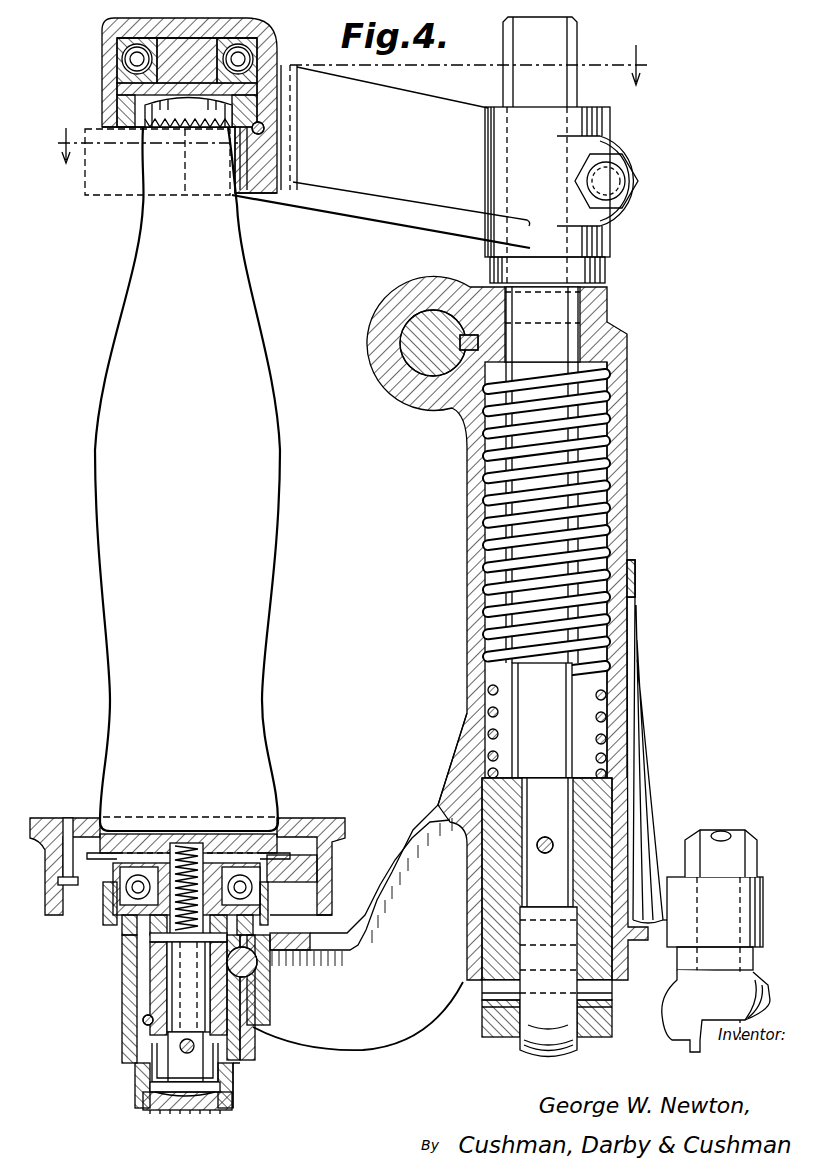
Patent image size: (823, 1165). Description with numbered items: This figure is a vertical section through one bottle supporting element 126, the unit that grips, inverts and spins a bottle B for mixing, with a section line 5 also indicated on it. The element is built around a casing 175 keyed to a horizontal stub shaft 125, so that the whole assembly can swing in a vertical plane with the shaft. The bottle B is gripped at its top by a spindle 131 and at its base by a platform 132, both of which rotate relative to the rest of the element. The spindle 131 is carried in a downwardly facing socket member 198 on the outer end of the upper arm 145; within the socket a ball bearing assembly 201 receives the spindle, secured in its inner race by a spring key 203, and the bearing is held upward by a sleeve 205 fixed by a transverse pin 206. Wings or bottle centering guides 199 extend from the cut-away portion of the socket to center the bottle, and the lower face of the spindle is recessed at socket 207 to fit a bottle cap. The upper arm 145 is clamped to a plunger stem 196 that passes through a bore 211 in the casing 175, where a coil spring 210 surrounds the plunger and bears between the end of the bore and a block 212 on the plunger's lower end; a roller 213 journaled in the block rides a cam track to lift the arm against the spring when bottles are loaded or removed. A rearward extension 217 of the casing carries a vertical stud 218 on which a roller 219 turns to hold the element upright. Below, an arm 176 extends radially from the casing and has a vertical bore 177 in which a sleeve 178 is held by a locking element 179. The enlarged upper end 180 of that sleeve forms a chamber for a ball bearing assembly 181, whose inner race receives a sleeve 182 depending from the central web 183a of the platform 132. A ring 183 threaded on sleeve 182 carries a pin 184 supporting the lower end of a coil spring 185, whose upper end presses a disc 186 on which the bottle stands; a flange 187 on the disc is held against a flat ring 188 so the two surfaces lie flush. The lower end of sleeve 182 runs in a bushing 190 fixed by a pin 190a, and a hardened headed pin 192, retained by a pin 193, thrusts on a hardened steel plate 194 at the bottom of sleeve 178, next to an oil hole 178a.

The bottle B is at (268, 590).
The section line 5- 5 is at (353, 104).
The spindle 131 is at (150, 27).
The ball bearing assembly 201 is at (122, 67).
The socket member 198 is at (112, 106).
The spring key 203 is at (248, 37).
The transverse pin 206 is at (280, 113).
The socket 207 is at (262, 160).
The sleeve 205 is at (252, 195).
The wings or bottle centering guides 199 is at (163, 184).
The upper arm 145 is at (333, 198).
The plunger stem 196 is at (613, 303).
The stub shaft 125 is at (422, 367).
The bottle supporting element 126 is at (454, 602).
The coil spring 210 is at (606, 512).
The bore 211 is at (630, 534).
The casing 175 is at (622, 627).
The block 212 is at (598, 807).
The roller 213 is at (537, 1022).
The rearward extension 217 is at (650, 870).
The stud 218 is at (722, 857).
The roller 219 is at (678, 1010).
The arm 176 is at (360, 1023).
The platform 132 is at (337, 813).
The flange 187 is at (334, 849).
The flat ring 188 is at (78, 817).
The disc 186 is at (110, 837).
The coil spring 185 is at (193, 840).
The ring 183 is at (209, 889).
The central web 183a is at (118, 900).
The enlarged upper end 180 is at (150, 935).
The ball bearing assembly 181 is at (155, 940).
The sleeve 182 is at (160, 988).
The bushing 190 is at (143, 1021).
The pin 190a is at (180, 1046).
The sleeve 178 is at (138, 1073).
The pin 193 is at (155, 1077).
The headed pin 192 is at (182, 1100).
The hardened steel plate 194 is at (215, 1112).
The vertical bore 177 is at (240, 1065).
The oil hole 178a is at (237, 1090).
The locking element 179 is at (256, 962).
The pin 184 is at (258, 1000).